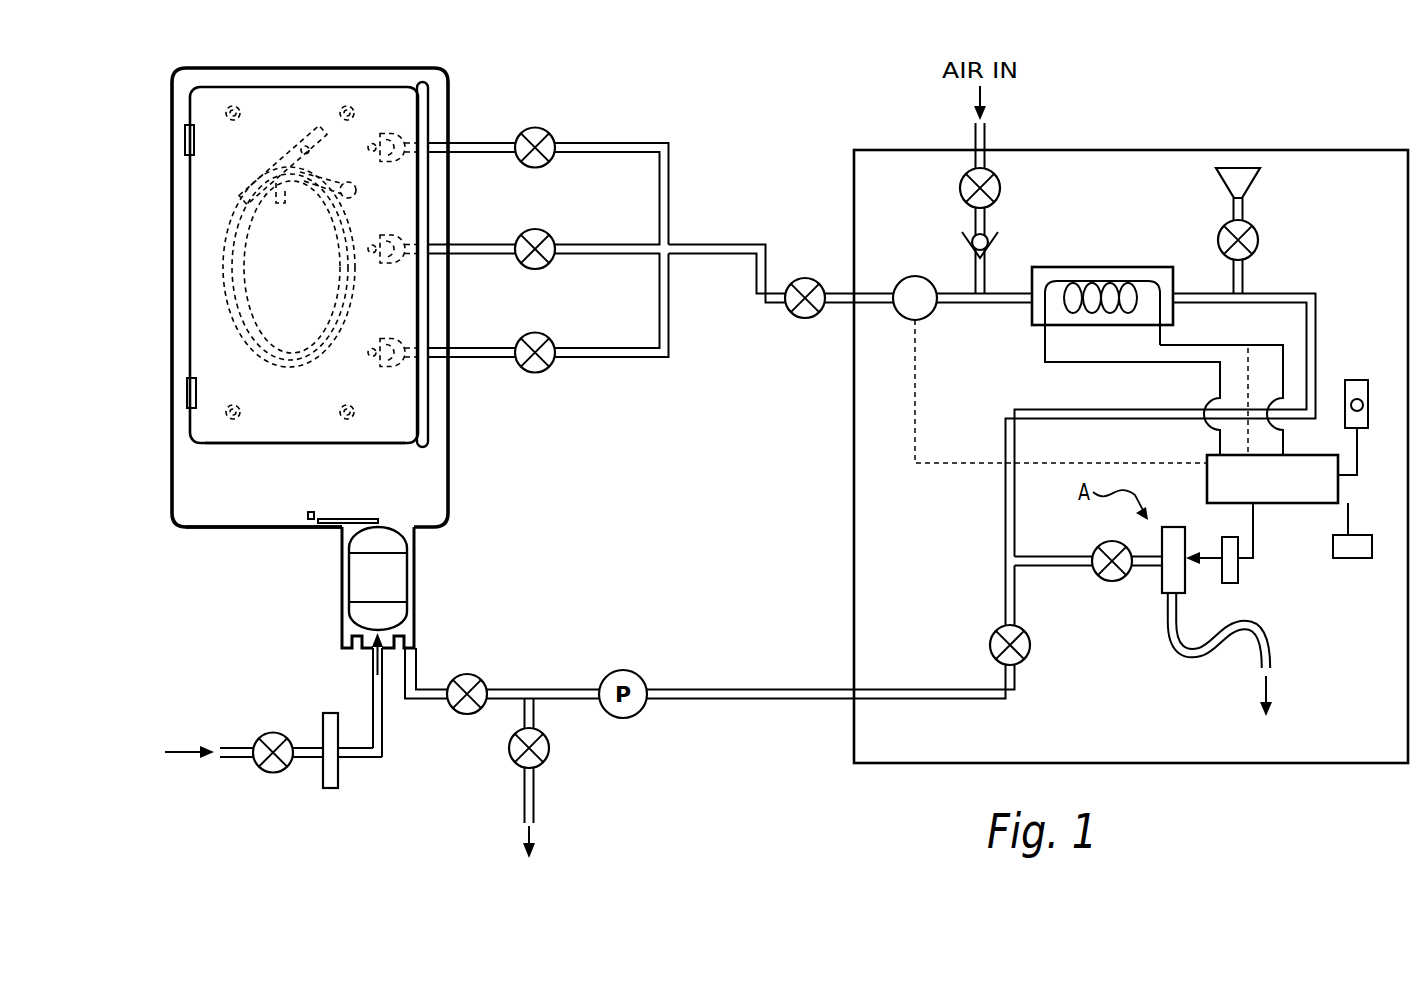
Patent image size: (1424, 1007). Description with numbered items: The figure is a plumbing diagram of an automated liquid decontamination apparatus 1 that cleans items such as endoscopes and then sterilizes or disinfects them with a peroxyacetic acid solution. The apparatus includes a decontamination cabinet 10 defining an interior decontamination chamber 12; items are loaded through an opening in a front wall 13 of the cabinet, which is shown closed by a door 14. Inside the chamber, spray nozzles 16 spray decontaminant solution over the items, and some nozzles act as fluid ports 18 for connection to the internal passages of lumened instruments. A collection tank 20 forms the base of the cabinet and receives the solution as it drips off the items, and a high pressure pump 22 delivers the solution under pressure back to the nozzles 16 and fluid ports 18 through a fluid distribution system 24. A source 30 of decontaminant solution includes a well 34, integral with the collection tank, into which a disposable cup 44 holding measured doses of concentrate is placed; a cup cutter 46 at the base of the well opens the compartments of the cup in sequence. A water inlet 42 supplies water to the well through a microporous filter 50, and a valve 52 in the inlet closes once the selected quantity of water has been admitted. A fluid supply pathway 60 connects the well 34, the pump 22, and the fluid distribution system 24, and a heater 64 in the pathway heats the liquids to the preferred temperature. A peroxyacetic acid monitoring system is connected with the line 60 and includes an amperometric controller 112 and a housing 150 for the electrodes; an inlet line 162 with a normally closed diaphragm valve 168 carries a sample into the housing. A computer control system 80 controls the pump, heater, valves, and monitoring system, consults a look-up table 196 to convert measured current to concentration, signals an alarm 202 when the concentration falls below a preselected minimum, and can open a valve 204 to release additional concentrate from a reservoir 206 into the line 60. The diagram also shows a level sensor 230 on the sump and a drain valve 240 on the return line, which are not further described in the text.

The automated liquid decontamination apparatus 1 is at (714, 100).
The decontamination cabinet 10 is at (170, 466).
The decontamination chamber 12 is at (220, 323).
The front wall 13 is at (330, 493).
The door 14 is at (248, 452).
The spray nozzles 16 is at (372, 262).
The fluid ports 18 is at (232, 122).
The collection tank 20 is at (256, 529).
The high pressure pump 22 is at (902, 316).
The fluid distribution system 24 is at (669, 296).
The source of decontaminant solution 30 is at (363, 596).
The well 34 is at (342, 625).
The water inlet 42 is at (232, 757).
The cup 44 is at (398, 583).
The cup cutter 46 is at (373, 655).
The microporous filter 50 is at (340, 774).
The valve 52 is at (283, 773).
The fluid supply pathway 60 is at (966, 303).
The heater 64 is at (1122, 267).
The computer control system 80 is at (1277, 505).
The amperometric controller 112 is at (1227, 587).
The housing 150 is at (1160, 575).
The inlet line 162 is at (1068, 556).
The diaphragm valve 168 is at (1118, 583).
The look-up table 196 is at (1353, 560).
The alarm 202 is at (1357, 380).
The valve 204 is at (1258, 242).
The reservoir 206 is at (1223, 187).
The level sensor 230 is at (350, 522).
The drain valve 240 is at (510, 752).